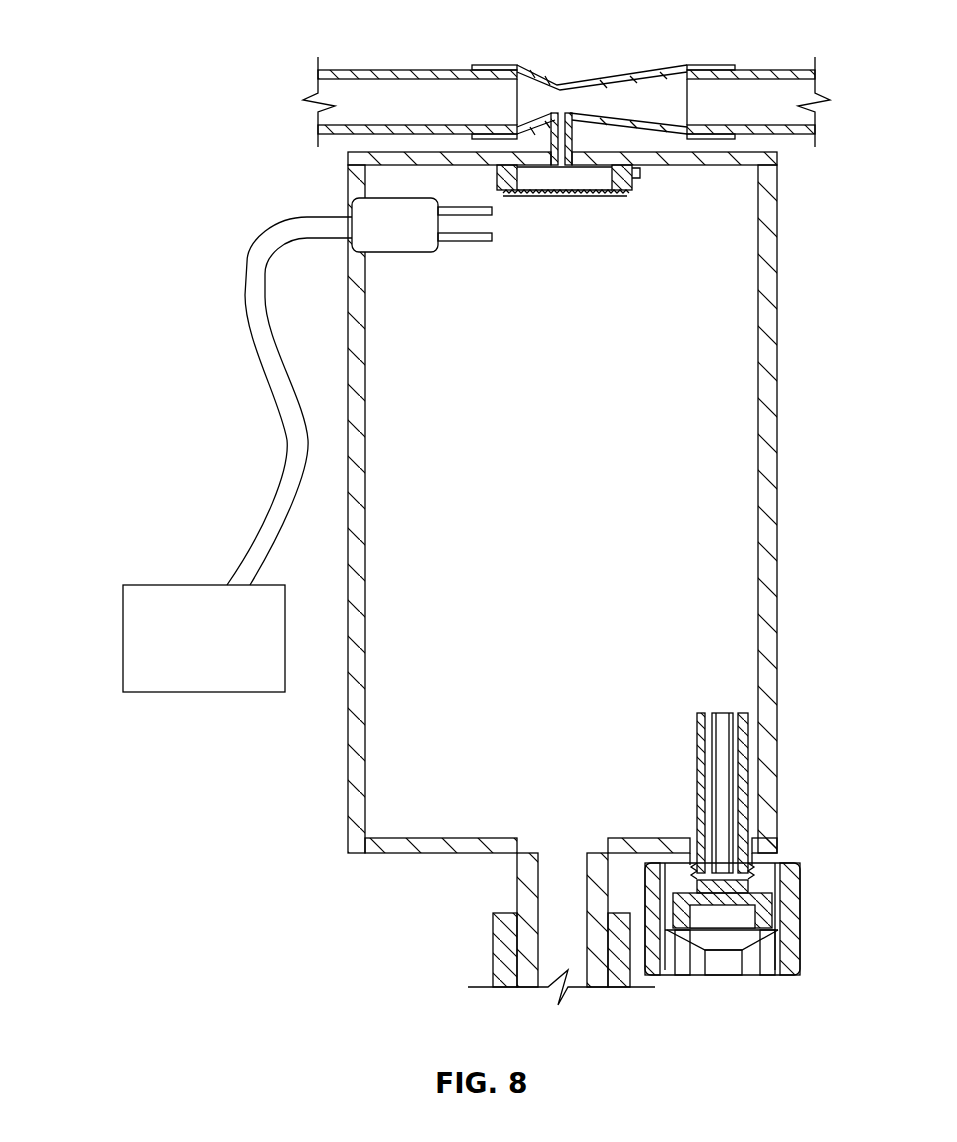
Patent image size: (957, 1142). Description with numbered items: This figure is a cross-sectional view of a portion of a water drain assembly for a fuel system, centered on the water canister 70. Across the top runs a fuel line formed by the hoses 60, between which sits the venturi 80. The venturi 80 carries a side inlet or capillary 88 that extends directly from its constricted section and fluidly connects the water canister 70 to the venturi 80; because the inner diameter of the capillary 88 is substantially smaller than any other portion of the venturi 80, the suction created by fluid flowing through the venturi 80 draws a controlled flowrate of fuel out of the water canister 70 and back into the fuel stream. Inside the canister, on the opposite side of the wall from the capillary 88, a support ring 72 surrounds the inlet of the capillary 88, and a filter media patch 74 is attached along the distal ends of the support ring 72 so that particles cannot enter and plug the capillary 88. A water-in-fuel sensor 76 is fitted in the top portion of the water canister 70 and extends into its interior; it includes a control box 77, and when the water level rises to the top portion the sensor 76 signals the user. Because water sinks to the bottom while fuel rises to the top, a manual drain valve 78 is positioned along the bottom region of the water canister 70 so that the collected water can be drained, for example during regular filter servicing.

The hose 60 is at (376, 70).
The venturi 80 is at (632, 60).
The capillary 88 is at (572, 133).
The water canister 70 is at (777, 432).
The support ring 72 is at (640, 182).
The filter media patch 74 is at (578, 196).
The water-in-fuel (WIF) sensor 76 is at (392, 192).
The control box 77 is at (122, 638).
The manual drain valve 78 is at (800, 895).